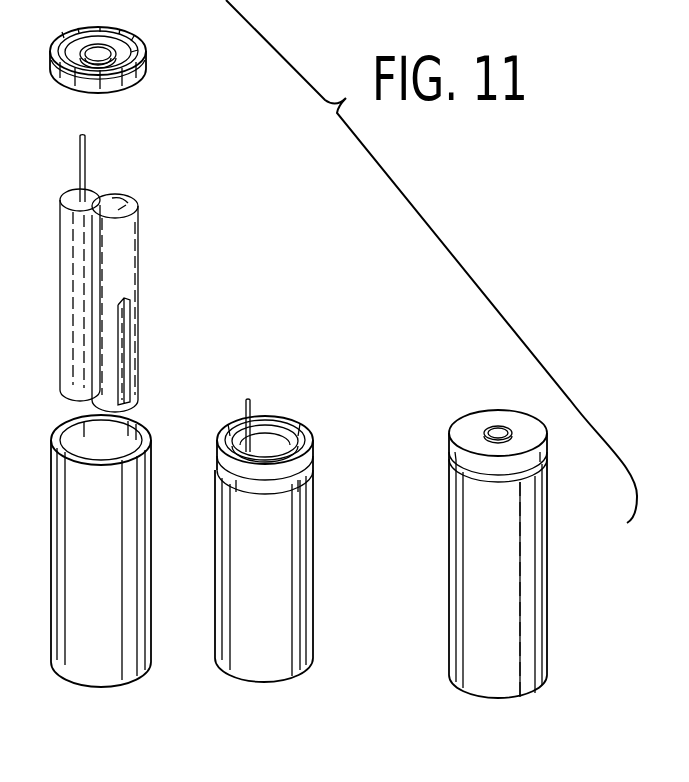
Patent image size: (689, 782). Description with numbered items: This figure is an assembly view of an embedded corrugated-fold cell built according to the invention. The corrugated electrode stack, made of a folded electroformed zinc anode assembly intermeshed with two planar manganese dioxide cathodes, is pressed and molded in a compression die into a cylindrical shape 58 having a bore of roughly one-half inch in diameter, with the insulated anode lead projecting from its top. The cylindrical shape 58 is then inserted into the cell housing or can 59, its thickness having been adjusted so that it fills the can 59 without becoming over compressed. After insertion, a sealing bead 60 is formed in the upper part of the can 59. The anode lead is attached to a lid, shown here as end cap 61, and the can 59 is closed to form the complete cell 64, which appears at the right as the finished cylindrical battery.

The cylindrical shape 58 is at (127, 190).
The cell housing or can 59 is at (138, 432).
The sealing bead 60 is at (298, 522).
The end cap 61 is at (147, 63).
The complete cell 64 is at (530, 525).